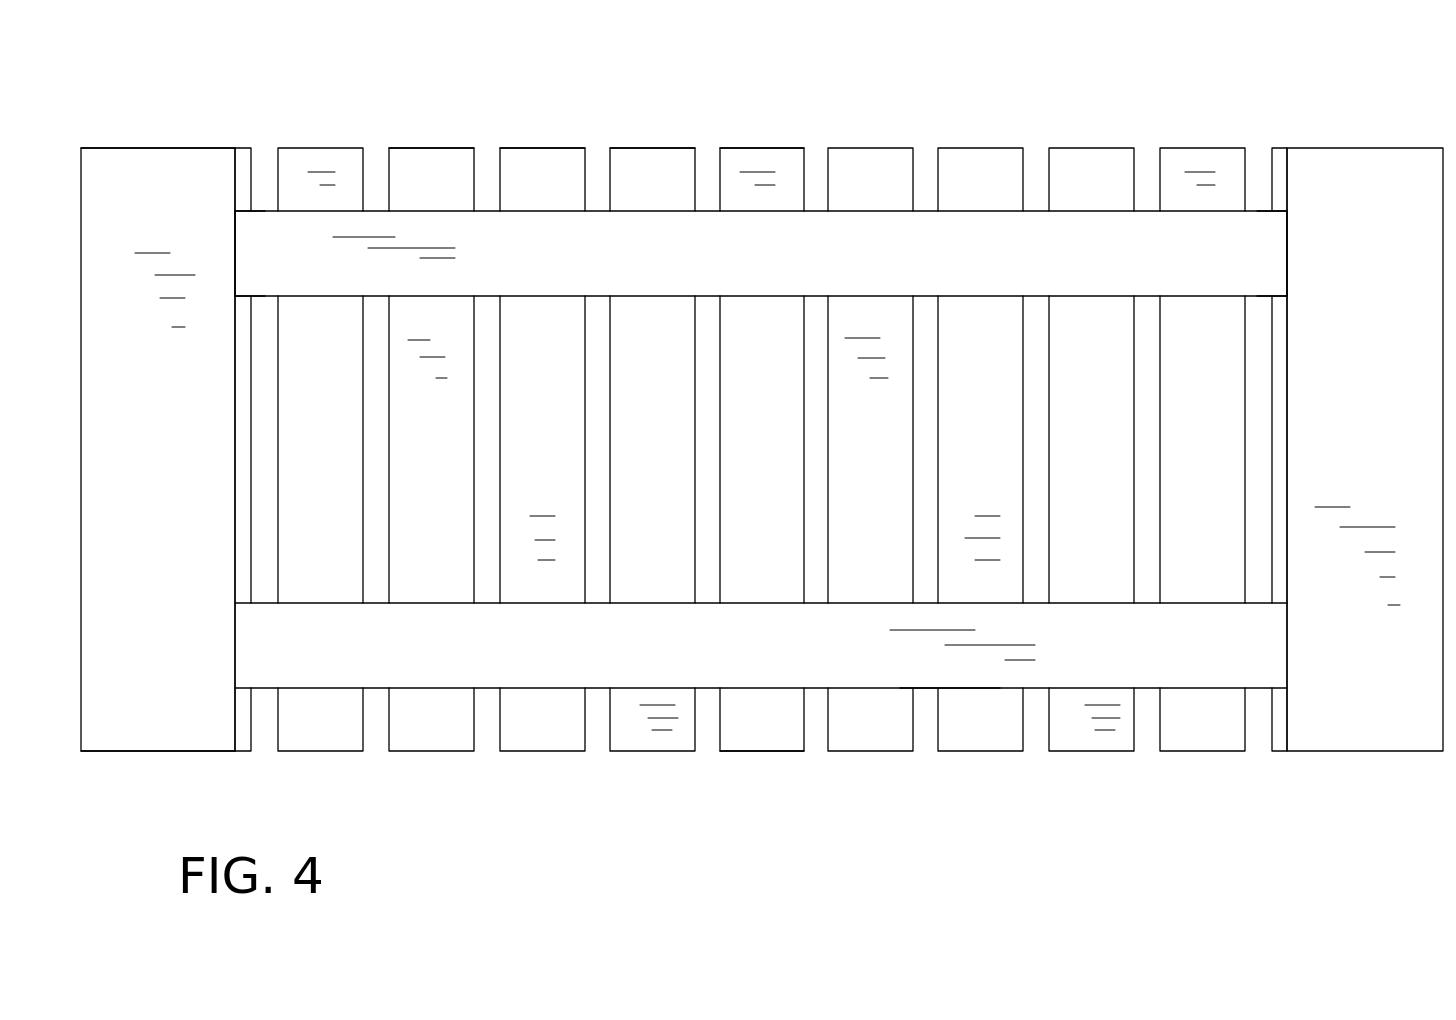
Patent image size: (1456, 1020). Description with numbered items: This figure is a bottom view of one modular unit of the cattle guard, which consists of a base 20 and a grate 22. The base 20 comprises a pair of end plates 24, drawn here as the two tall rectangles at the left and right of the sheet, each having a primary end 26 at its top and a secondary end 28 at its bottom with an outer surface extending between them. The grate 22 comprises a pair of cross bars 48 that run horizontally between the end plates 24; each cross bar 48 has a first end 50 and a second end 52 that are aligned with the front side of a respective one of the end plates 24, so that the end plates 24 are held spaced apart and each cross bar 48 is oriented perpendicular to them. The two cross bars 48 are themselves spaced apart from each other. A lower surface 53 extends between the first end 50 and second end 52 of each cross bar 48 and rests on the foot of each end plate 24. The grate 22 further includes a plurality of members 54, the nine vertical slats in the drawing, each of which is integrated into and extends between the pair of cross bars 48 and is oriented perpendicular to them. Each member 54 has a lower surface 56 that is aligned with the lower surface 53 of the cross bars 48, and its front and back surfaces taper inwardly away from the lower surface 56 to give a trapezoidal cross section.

The base 20 is at (232, 94).
The grate 22 is at (893, 97).
The end plate 24 is at (133, 751).
The primary end 26 is at (168, 148).
The secondary end 28 is at (182, 751).
The cross bar 48 is at (1085, 211).
The first end 50 is at (236, 258).
The second end 52 is at (1287, 262).
The lower surface 53 is at (968, 668).
The member 54 is at (743, 148).
The lower surface 56 is at (786, 729).